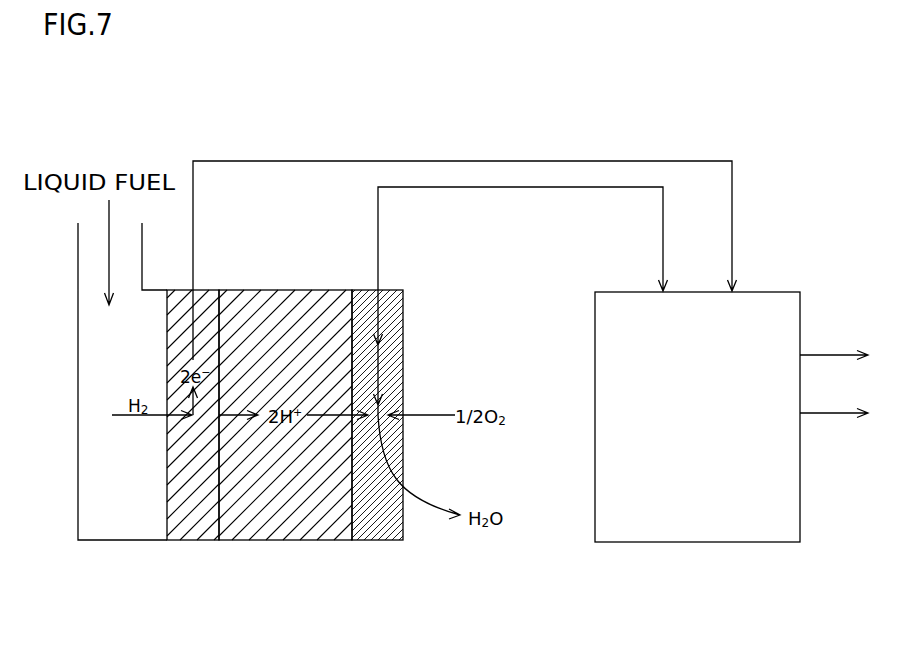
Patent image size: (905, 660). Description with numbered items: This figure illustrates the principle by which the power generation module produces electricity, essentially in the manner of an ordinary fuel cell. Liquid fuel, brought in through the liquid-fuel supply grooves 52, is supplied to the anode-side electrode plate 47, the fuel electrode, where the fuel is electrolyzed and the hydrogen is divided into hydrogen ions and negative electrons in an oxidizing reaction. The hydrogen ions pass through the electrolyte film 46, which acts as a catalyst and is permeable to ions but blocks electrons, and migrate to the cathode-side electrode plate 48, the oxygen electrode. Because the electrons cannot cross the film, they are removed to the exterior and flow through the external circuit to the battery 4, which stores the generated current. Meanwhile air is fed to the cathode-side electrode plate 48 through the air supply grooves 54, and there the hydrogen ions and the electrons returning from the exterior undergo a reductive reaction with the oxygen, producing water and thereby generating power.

The liquid-fuel supply grooves 52 is at (110, 468).
The anode-side electrode plate 47 is at (193, 540).
The electrolyte film 46 is at (293, 540).
The cathode-side electrode plate 48 is at (380, 540).
The air supply grooves 54 is at (403, 391).
The battery 4 is at (685, 542).